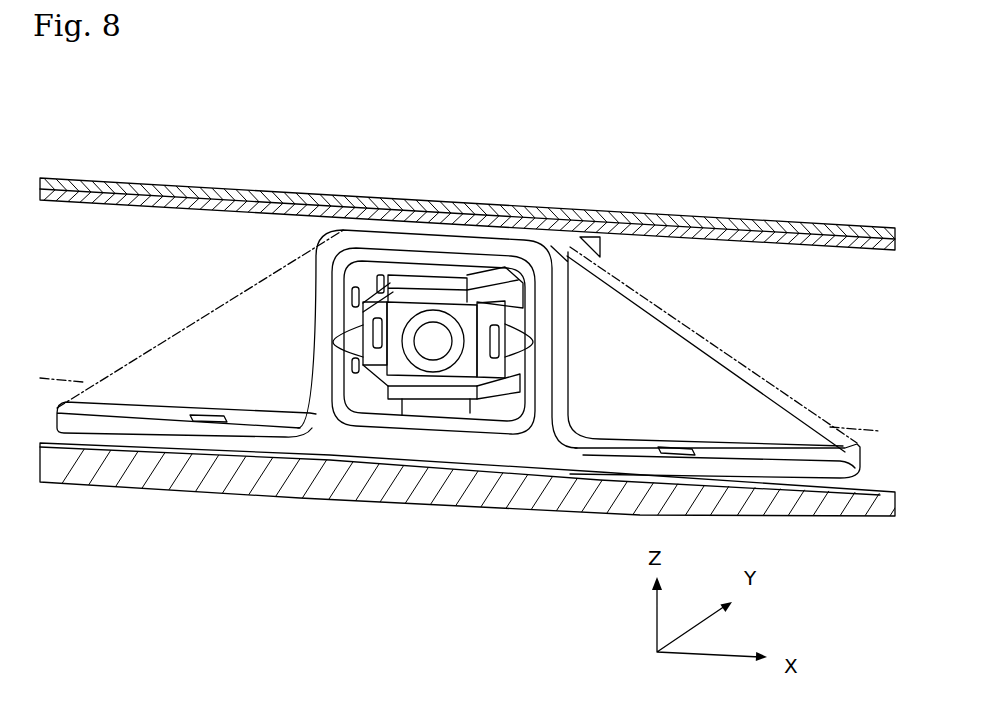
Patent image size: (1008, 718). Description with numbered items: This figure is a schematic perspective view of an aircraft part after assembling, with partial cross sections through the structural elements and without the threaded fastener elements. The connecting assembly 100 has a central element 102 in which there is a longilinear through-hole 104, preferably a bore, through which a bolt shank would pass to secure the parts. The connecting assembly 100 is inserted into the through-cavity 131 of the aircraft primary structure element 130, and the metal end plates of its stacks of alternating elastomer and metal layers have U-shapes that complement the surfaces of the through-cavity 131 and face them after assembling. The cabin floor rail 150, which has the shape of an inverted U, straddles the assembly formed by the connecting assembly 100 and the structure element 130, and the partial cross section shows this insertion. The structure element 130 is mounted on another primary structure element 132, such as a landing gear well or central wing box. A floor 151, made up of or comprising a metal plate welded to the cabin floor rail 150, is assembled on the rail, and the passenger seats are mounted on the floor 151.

The connecting assembly 100 is at (382, 400).
The central element 102 is at (467, 363).
The through-hole 104 is at (438, 343).
The aircraft primary structure element 130 is at (223, 356).
The through-cavity 131 is at (320, 275).
The primary structure element 132 is at (120, 487).
The cabin floor rail 150 is at (243, 188).
The floor 151 is at (293, 187).